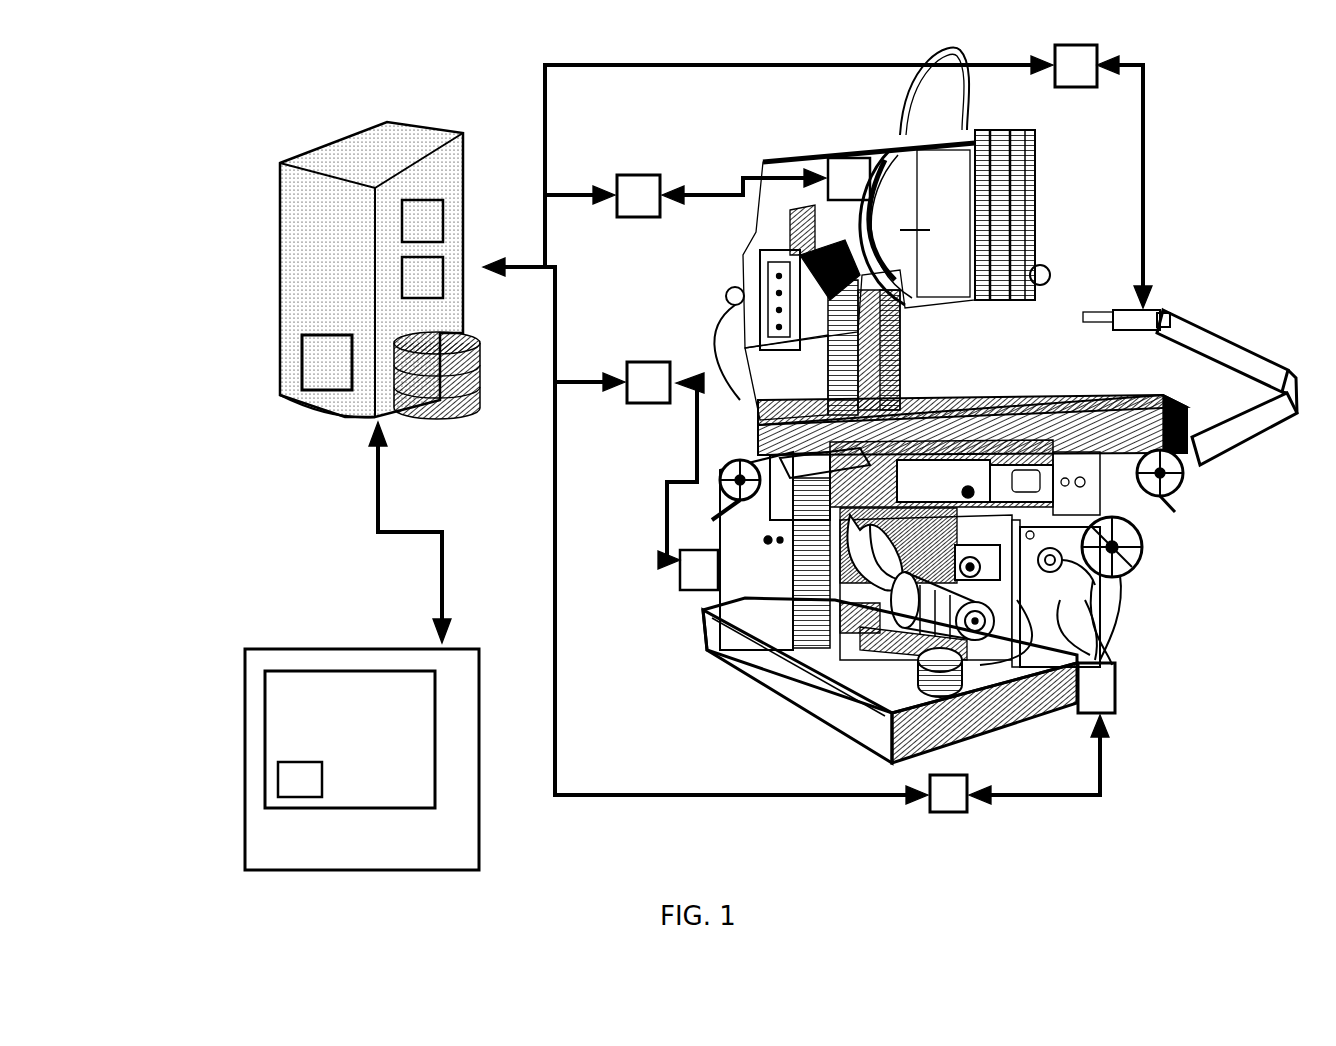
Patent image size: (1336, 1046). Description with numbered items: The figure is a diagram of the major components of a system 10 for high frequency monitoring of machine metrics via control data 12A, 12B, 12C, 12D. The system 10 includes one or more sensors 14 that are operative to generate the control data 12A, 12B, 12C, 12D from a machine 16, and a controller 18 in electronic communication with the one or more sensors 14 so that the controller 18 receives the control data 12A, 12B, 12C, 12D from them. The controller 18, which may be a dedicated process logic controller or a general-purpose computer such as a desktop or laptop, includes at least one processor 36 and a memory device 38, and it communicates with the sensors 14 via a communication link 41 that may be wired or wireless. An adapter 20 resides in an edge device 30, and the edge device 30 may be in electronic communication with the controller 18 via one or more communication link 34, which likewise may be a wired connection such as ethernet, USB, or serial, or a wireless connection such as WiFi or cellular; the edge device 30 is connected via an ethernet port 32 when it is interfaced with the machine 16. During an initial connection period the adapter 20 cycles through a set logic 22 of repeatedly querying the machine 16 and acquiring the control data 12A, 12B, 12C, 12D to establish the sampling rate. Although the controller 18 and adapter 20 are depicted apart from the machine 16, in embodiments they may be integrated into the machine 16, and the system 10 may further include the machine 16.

The system 10 is at (128, 141).
The control data 12A is at (1080, 43).
The control data 12B is at (650, 177).
The control data 12C is at (638, 362).
The control data 12D is at (933, 813).
The sensors 14 is at (857, 163).
The machine 16 is at (785, 155).
The controller 18 is at (357, 135).
The adapter 20 is at (275, 674).
The set logic 22 is at (300, 779).
The edge device 30 is at (474, 783).
The ethernet port 32 is at (327, 362).
The communication link 34 is at (373, 504).
The processor 36 is at (422, 221).
The memory device 38 is at (422, 277).
The communication link 41 is at (693, 62).